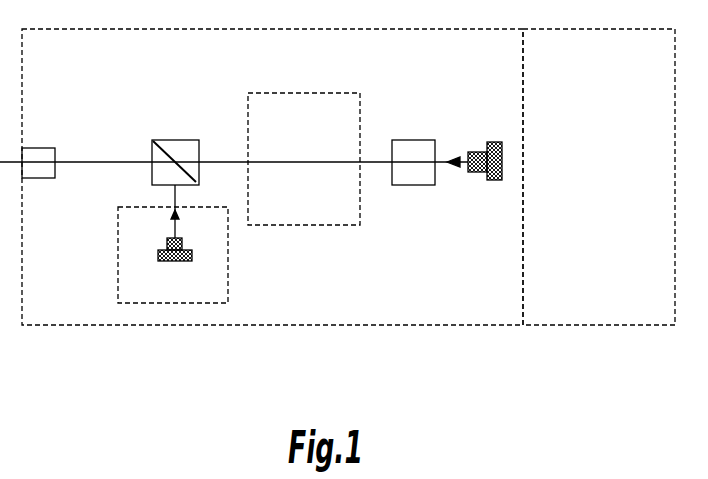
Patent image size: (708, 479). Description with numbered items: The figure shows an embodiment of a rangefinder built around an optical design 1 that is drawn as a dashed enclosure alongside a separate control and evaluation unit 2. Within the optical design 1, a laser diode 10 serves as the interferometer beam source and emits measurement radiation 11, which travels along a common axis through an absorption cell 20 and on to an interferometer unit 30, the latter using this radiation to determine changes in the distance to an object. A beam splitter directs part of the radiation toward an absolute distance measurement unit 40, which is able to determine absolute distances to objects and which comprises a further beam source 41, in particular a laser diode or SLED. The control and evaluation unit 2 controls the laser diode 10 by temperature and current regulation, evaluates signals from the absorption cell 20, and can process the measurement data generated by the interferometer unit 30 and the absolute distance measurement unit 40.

The optical design 1 is at (62, 78).
The control and evaluation unit 2 is at (563, 80).
The laser diode 10 is at (470, 190).
The measurement radiation 11 is at (234, 222).
The absorption cell 20 is at (428, 136).
The interferometer unit 30 is at (307, 140).
The absolute distance measurement unit 40 is at (141, 255).
The further beam source 41 is at (219, 266).